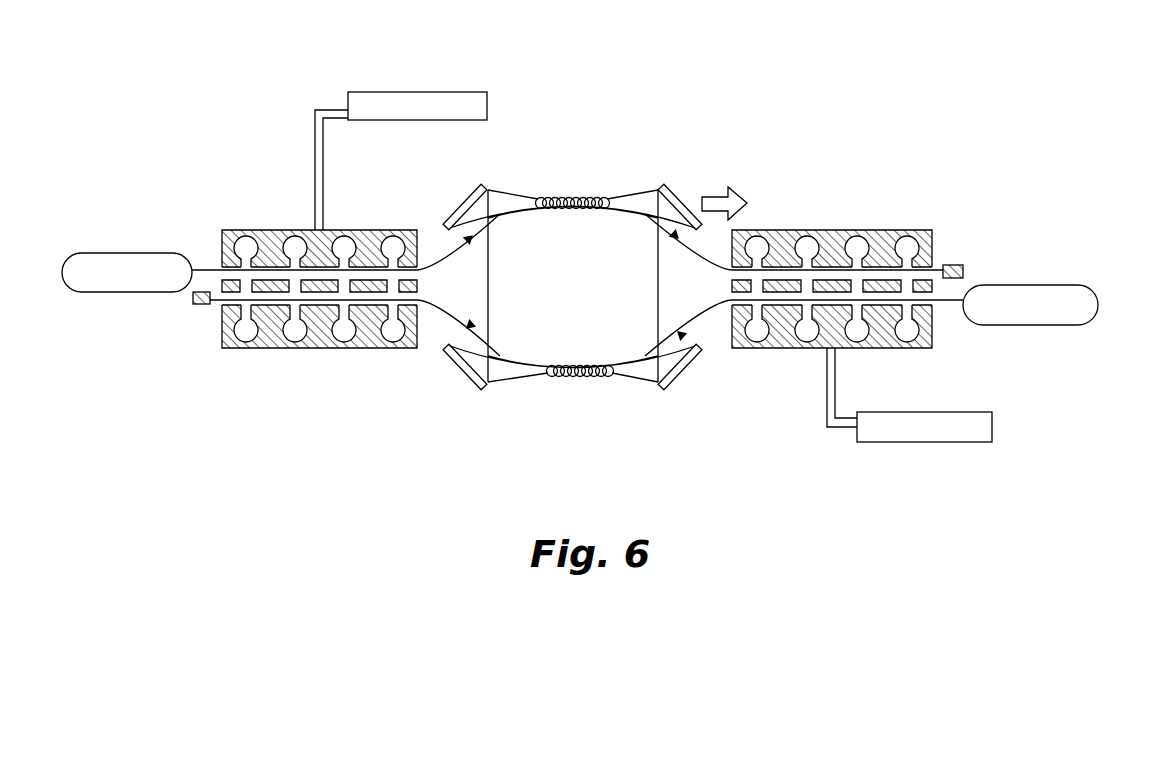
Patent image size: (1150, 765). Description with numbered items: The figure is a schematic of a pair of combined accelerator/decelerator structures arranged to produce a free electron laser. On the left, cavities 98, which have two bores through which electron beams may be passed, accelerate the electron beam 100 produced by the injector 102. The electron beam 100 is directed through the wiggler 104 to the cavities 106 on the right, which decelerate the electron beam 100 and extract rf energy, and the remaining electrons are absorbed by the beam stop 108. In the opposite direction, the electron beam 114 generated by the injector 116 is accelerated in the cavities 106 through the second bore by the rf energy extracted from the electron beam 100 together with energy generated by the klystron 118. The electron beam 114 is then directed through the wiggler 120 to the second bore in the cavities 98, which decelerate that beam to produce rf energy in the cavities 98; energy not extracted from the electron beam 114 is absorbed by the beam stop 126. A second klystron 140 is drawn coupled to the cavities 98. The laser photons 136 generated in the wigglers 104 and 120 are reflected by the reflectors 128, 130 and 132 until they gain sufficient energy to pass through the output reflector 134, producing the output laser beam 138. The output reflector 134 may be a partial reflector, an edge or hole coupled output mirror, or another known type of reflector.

The cavities 98 is at (281, 230).
The electron beam 100 is at (444, 252).
The injector 102 is at (93, 292).
The wiggler 104 is at (582, 198).
The cavities 106 is at (813, 230).
The beam stop 108 is at (955, 265).
The electron beam 114 is at (710, 322).
The injector 116 is at (1068, 326).
The klystron 118 is at (943, 442).
The wiggler 120 is at (547, 377).
The beam stop 126 is at (203, 304).
The reflector 128 is at (678, 387).
The reflector 130 is at (455, 365).
The reflector 132 is at (482, 185).
The output reflector 134 is at (665, 190).
The laser photons 136 is at (488, 262).
The output laser beam 138 is at (742, 197).
The klystron 140 is at (382, 92).